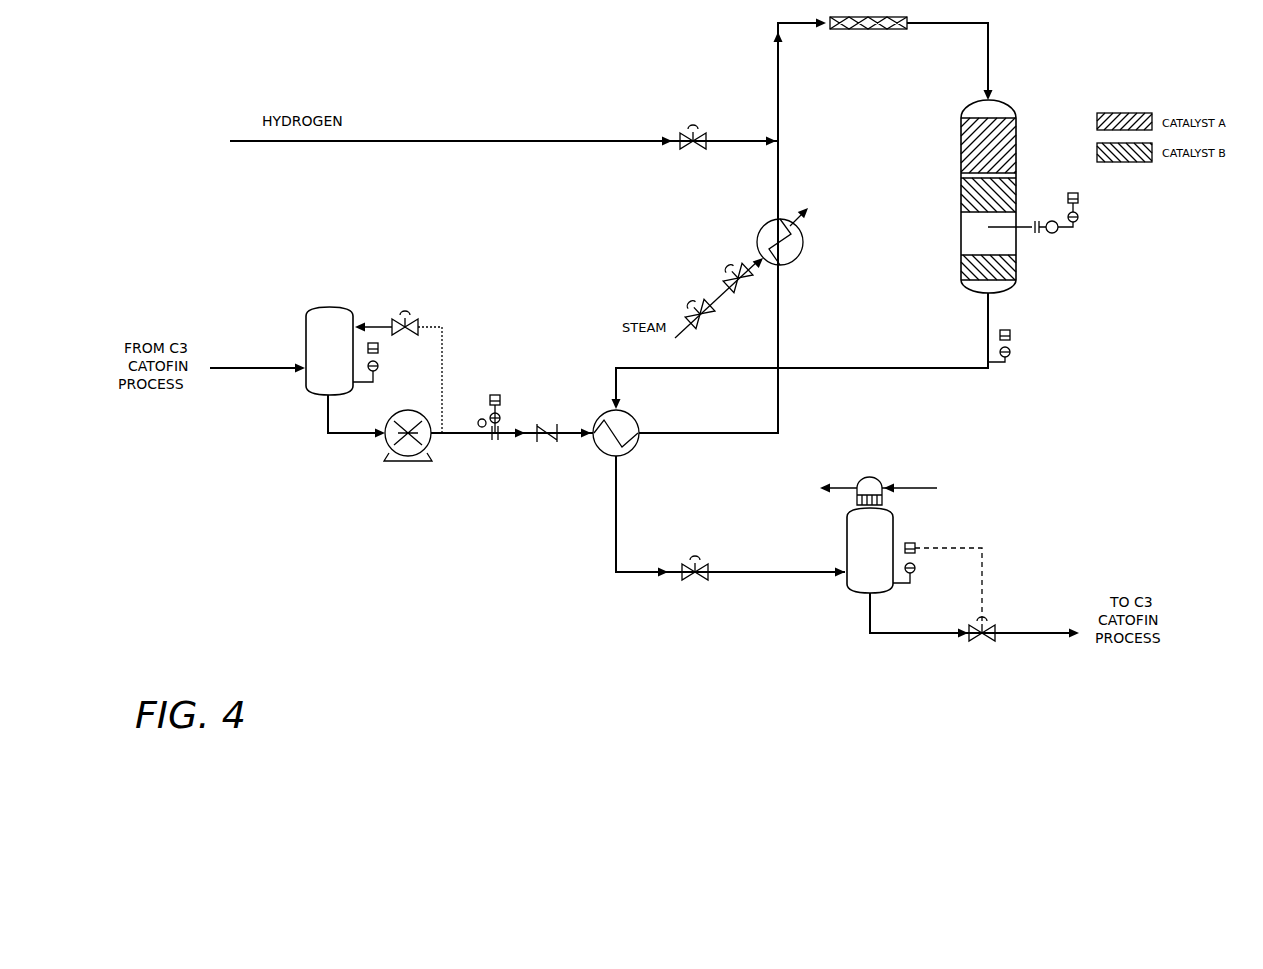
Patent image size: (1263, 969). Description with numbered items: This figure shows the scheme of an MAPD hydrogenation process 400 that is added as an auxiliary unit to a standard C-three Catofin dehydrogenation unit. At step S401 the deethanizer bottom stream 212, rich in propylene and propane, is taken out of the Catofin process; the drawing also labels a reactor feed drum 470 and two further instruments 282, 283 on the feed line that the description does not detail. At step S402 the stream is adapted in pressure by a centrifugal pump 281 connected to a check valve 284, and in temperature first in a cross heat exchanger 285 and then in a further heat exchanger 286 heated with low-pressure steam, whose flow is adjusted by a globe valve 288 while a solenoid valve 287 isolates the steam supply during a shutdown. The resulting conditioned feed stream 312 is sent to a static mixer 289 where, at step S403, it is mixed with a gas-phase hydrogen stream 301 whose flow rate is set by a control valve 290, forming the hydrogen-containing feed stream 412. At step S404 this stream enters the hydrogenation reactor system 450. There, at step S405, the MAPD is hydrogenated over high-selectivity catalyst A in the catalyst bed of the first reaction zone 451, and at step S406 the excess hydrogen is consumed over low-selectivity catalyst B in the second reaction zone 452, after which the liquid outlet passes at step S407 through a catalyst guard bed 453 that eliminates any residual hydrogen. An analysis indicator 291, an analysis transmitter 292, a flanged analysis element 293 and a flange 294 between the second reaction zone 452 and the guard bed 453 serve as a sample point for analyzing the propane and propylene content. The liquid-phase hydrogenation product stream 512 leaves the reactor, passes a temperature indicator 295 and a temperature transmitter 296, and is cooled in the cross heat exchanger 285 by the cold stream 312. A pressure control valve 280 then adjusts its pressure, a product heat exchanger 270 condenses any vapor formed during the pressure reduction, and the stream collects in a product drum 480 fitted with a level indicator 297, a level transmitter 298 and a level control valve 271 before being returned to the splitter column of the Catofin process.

The MAPD hydrogenation process 400 is at (120, 188).
The hydrogen stream 301 is at (504, 152).
The control valve 290 is at (693, 129).
The hydrogen mixing step S403 is at (748, 141).
The pressure and temperature adaptation step S402 is at (778, 186).
The conditioned feed stream 312 is at (628, 243).
The static mixer 289 is at (868, 24).
The hydrogen-containing feed stream 412 is at (950, 50).
The reactor feeding step S404 is at (1018, 51).
The hydrogenation reactor system 450 is at (1027, 187).
The first reaction zone 451 is at (961, 118).
The first hydrogenation step S405 is at (961, 140).
The second reaction zone 452 is at (961, 176).
The second hydrogenation step S406 is at (961, 195).
The catalyst guard bed 453 is at (961, 256).
The guard bed step S407 is at (961, 272).
The analysis indicator 291 is at (1092, 200).
The analysis transmitter 292 is at (1092, 217).
The flange 294 is at (1019, 238).
The flanged analysis element 293 is at (1067, 238).
The hydrogenation product stream 512 is at (846, 474).
The temperature indicator 295 is at (1024, 335).
The temperature transmitter 296 is at (1018, 352).
The heat exchanger 286 is at (766, 235).
The globe valve 288 is at (721, 274).
The solenoid valve 287 is at (685, 309).
The cross heat exchanger 285 is at (657, 458).
The check valve 284 is at (544, 443).
The flow indicator 282 is at (513, 415).
The flow controller 283 is at (507, 419).
The centrifugal pump 281 is at (408, 448).
The deethanizer bottom stream 212 is at (297, 411).
The reactor feed drum 470 is at (367, 350).
The feed take-out step S401 is at (236, 368).
The pressure control valve 280 is at (696, 577).
The product drum 480 is at (833, 550).
The product heat exchanger 270 is at (892, 468).
The level indicator 297 is at (943, 575).
The level transmitter 298 is at (922, 570).
The level control valve 271 is at (986, 639).